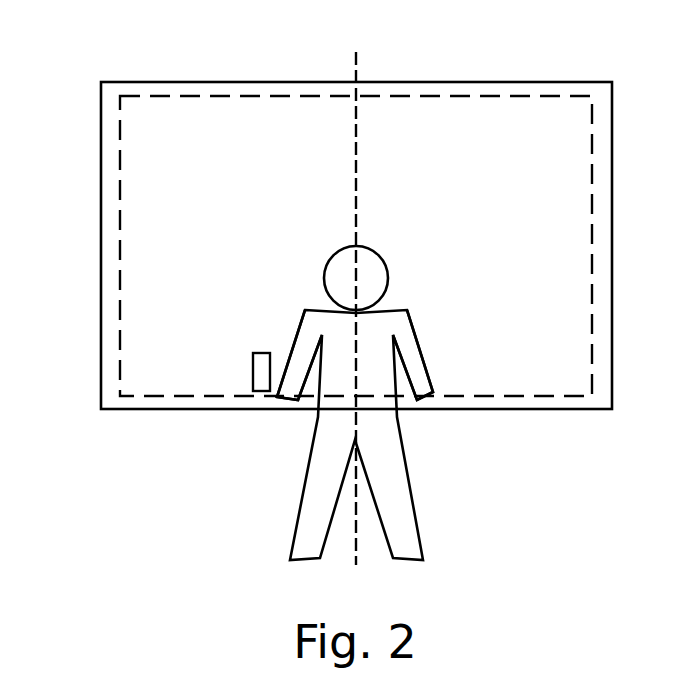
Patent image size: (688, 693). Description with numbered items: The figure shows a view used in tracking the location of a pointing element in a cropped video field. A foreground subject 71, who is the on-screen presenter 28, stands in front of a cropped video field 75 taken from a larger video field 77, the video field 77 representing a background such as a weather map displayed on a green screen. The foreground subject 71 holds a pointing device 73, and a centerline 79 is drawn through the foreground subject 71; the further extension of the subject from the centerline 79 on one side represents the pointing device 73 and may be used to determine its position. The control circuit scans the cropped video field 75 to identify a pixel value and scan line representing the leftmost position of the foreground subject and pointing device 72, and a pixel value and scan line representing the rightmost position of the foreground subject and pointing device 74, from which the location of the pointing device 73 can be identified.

The video field 77 is at (88, 96).
The cropped video field 75 is at (106, 246).
The centerline 79 is at (374, 56).
The on-screen presenter 28 is at (301, 243).
The foreground subject 71 is at (280, 510).
The pointing device (leftmost position) 72 is at (240, 352).
The pointing device 73 is at (278, 411).
The pointing device (rightmost position) 74 is at (432, 420).